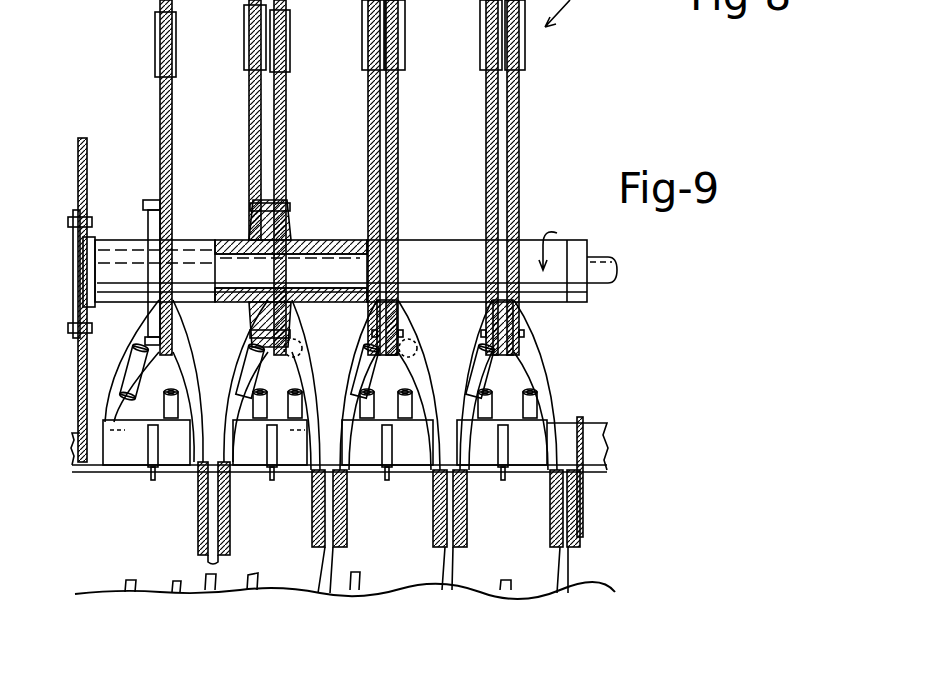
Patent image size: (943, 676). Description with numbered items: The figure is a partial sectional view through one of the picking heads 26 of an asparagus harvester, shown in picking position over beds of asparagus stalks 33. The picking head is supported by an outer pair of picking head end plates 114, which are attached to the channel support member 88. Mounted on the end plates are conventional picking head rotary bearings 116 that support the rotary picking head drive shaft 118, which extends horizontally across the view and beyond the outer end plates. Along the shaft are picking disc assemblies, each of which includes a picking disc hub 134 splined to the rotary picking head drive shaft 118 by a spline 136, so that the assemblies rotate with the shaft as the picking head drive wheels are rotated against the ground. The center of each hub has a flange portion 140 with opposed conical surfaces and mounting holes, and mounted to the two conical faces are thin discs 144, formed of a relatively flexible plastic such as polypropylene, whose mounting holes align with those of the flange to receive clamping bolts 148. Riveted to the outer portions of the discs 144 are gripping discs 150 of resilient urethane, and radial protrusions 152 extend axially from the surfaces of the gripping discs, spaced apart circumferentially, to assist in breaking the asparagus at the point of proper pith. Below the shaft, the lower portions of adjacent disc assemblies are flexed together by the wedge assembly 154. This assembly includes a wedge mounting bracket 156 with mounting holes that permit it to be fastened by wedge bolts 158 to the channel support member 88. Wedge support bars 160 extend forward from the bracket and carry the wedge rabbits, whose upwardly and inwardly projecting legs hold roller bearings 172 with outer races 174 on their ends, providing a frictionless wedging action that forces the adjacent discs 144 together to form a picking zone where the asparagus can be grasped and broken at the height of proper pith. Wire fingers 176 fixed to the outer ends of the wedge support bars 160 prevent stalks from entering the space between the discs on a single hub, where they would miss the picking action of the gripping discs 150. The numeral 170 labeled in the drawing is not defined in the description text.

The picking head 26 is at (566, 91).
The asparagus stalk 33 is at (440, 563).
The channel support member 88 is at (72, 468).
The picking head end plate 114 is at (78, 147).
The picking head rotary bearing 116 is at (73, 240).
The rotary picking head drive shaft 118 is at (603, 292).
The picking disc hub 134 is at (305, 222).
The spline 136 is at (303, 240).
The flange portion 140 is at (518, 222).
The disc 144 is at (397, 143).
The clamping bolt 148 is at (522, 200).
The gripping disc 150 is at (275, 38).
The radial protrusion 152 is at (333, 517).
The wedge assembly 154 is at (526, 531).
The wedge mounting bracket 156 is at (597, 440).
The wedge bolt 158 is at (400, 33).
The wedge support bar 160 is at (397, 450).
The cylinder 170 is at (123, 378).
The roller bearing 172 is at (532, 387).
The outer race 174 is at (127, 353).
The wire finger 176 is at (517, 510).